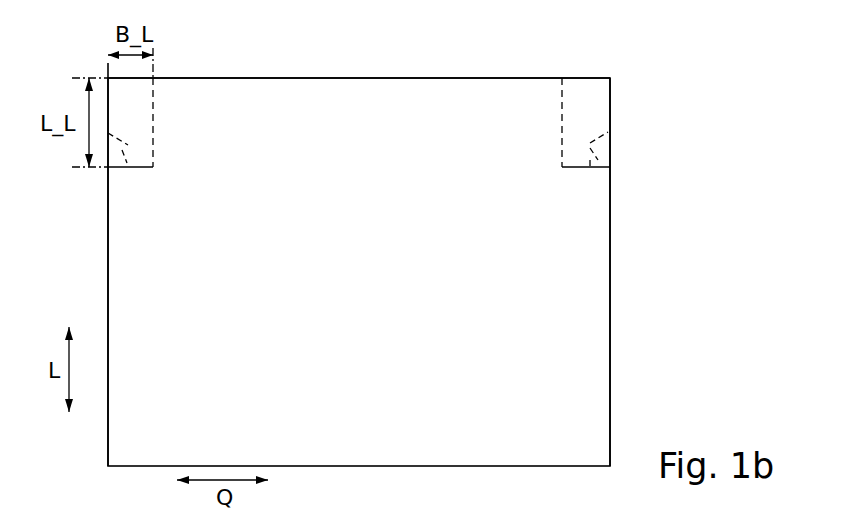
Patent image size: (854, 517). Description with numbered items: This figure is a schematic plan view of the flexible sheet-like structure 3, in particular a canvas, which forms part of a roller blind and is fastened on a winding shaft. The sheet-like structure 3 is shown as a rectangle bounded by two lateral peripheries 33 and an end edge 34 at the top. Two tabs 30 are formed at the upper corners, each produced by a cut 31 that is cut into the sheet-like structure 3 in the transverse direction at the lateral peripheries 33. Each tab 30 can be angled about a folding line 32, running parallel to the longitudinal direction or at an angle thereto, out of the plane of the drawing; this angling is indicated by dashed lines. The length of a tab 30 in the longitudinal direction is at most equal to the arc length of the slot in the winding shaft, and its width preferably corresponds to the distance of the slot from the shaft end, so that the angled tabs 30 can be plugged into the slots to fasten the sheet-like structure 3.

The flexible sheet-like structure 3 is at (640, 283).
The tab 30 is at (140, 113).
The cut 31 is at (137, 167).
The folding line 32 is at (153, 133).
The lateral periphery 33 is at (108, 280).
The end edge 34 is at (295, 78).